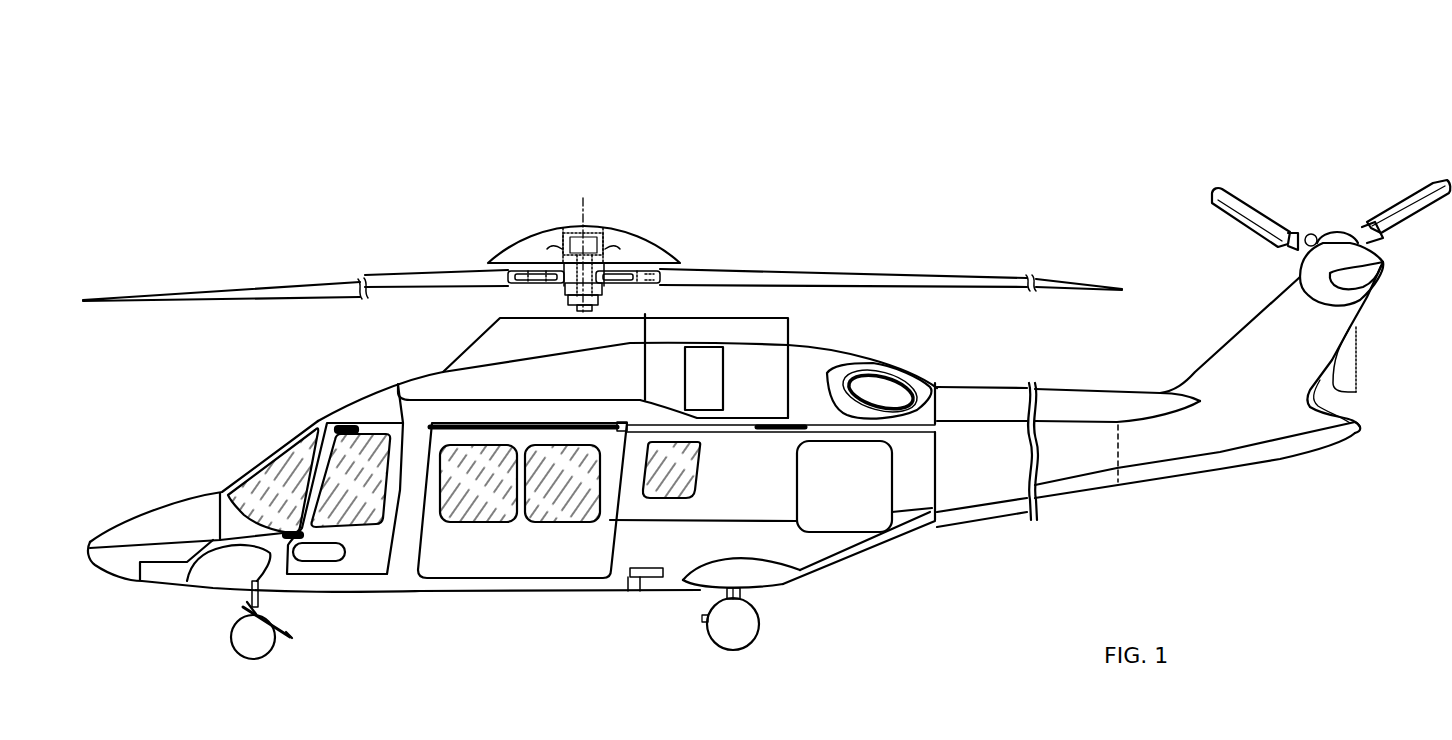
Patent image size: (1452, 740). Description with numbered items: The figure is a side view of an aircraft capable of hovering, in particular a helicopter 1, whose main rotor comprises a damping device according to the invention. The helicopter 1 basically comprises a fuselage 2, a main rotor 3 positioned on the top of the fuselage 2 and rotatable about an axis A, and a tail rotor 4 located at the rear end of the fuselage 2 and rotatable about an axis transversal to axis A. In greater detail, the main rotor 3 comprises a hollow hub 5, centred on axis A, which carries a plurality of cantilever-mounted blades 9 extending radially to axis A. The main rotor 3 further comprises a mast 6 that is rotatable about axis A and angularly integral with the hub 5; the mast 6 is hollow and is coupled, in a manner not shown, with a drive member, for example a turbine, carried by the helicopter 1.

The helicopter 1 is at (732, 212).
The fuselage 2 is at (507, 548).
The main rotor 3 is at (438, 259).
The tail rotor 4 is at (1340, 210).
The hub 5 is at (568, 286).
The mast 6 is at (591, 313).
The blades 9 is at (247, 292).
The axis A is at (587, 225).